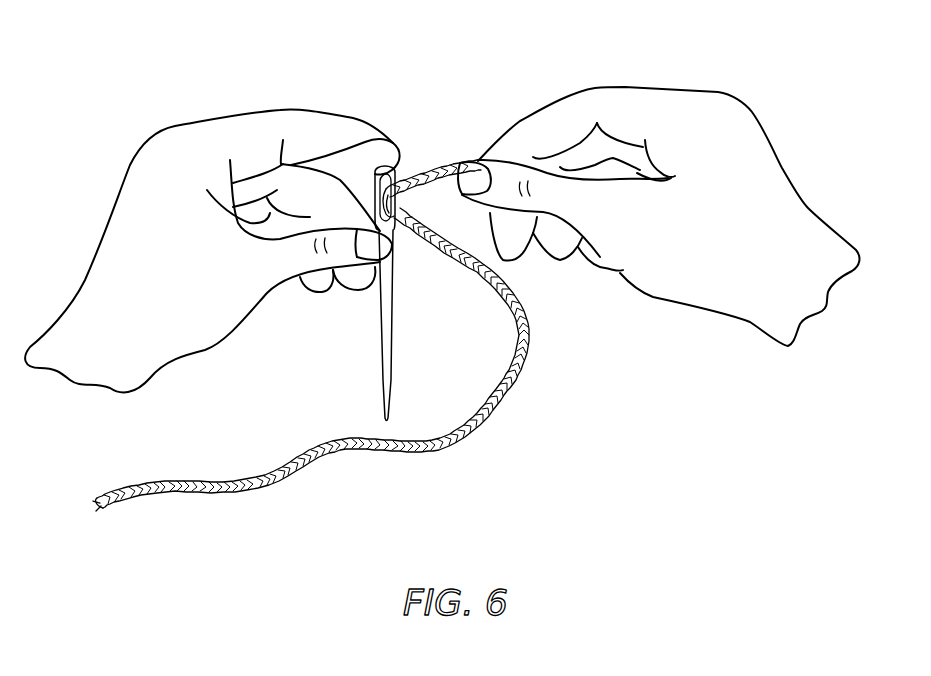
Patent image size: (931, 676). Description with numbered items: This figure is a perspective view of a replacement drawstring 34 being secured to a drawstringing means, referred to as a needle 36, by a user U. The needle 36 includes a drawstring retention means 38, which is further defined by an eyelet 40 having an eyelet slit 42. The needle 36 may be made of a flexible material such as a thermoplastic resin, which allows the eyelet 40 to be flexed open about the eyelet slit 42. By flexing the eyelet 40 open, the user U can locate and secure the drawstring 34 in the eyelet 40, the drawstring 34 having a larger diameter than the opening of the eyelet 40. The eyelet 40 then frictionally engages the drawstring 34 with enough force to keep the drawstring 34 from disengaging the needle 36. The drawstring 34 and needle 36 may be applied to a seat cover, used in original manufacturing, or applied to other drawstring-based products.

The drawstring 34 is at (362, 264).
The needle 36 is at (299, 232).
The drawstring retention means 38 is at (408, 166).
The eyelet 40 is at (383, 175).
The eyelet slit 42 is at (440, 162).
The user U is at (762, 108).